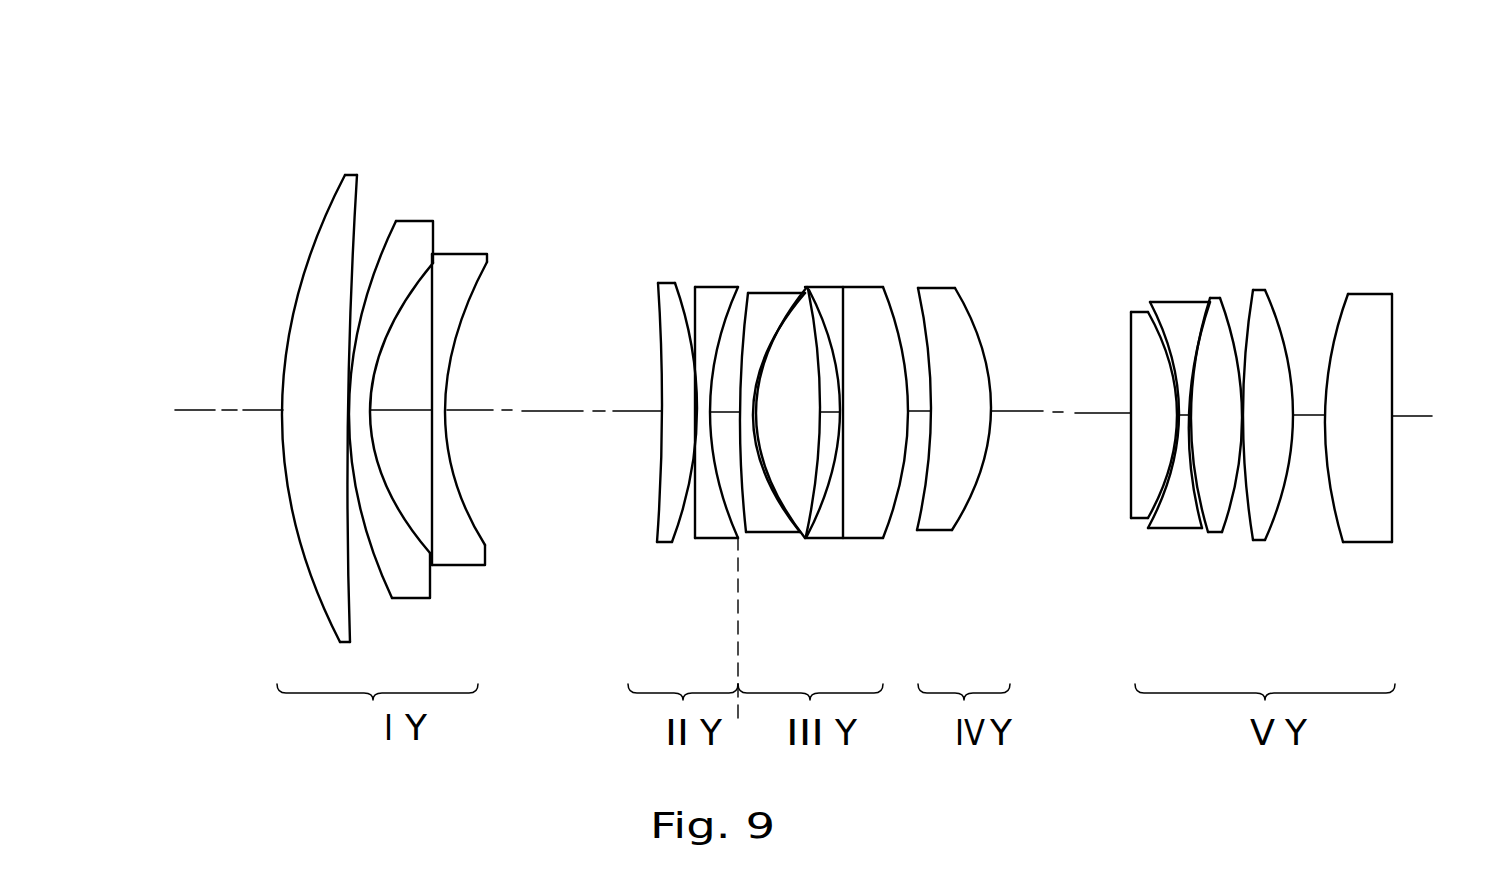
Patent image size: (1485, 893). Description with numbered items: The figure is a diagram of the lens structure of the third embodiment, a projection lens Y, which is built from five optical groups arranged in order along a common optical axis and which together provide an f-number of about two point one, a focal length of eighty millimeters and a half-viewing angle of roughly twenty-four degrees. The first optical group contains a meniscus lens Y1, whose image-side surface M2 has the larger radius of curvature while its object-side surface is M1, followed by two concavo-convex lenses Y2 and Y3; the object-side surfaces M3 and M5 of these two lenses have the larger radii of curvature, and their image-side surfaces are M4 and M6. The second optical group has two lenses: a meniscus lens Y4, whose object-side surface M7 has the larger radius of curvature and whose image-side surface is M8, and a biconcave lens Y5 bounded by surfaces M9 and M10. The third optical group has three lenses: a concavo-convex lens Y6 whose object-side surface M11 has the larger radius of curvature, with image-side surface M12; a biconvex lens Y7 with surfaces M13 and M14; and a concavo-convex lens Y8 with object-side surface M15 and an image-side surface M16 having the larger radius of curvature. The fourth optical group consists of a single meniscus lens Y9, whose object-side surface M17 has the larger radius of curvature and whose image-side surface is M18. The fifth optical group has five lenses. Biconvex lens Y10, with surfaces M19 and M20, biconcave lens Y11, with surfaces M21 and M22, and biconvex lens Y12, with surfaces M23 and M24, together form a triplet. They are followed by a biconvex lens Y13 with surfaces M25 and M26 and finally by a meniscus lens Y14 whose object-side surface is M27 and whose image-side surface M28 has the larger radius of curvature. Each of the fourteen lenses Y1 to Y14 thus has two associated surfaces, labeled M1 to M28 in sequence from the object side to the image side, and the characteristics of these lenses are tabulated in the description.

The projection lens Y is at (1268, 76).
The meniscus lens Y1 is at (335, 369).
The concavo-convex lens Y2 is at (428, 393).
The concavo-convex lens Y3 is at (505, 368).
The meniscus lens Y4 is at (647, 424).
The biconcave lens Y5 is at (720, 380).
The concavo-convex lens Y6 is at (794, 439).
The biconvex lens Y7 is at (822, 418).
The concavo-convex lens Y8 is at (896, 434).
The meniscus lens Y9 is at (988, 385).
The biconvex lens Y10 is at (1111, 439).
The biconcave lens Y11 is at (1172, 423).
The biconvex lens Y12 is at (1269, 400).
The biconvex lens Y13 is at (1345, 343).
The meniscus lens Y14 is at (1375, 447).
The lens surface M1 is at (332, 200).
The lens surface M2 is at (358, 190).
The lens surface M3 is at (378, 578).
The lens surface M4 is at (405, 532).
The lens surface M5 is at (440, 295).
The lens surface M6 is at (473, 302).
The lens surface M7 is at (655, 527).
The lens surface M8 is at (678, 533).
The lens surface M9 is at (693, 363).
The lens surface M10 is at (731, 315).
The lens surface M11 is at (752, 535).
The lens surface M12 is at (772, 533).
The lens surface M13 is at (806, 287).
The lens surface M14 is at (821, 372).
The lens surface M15 is at (838, 460).
The lens surface M16 is at (891, 505).
The lens surface M17 is at (928, 335).
The lens surface M18 is at (983, 345).
The lens surface M19 is at (1128, 498).
The lens surface M20 is at (1147, 512).
The lens surface M21 is at (1168, 363).
The lens surface M22 is at (1202, 323).
The lens surface M23 is at (1202, 507).
The lens surface M24 is at (1230, 507).
The lens surface M25 is at (1249, 300).
The lens surface M26 is at (1277, 332).
The lens surface M27 is at (1328, 485).
The lens surface M28 is at (1394, 510).